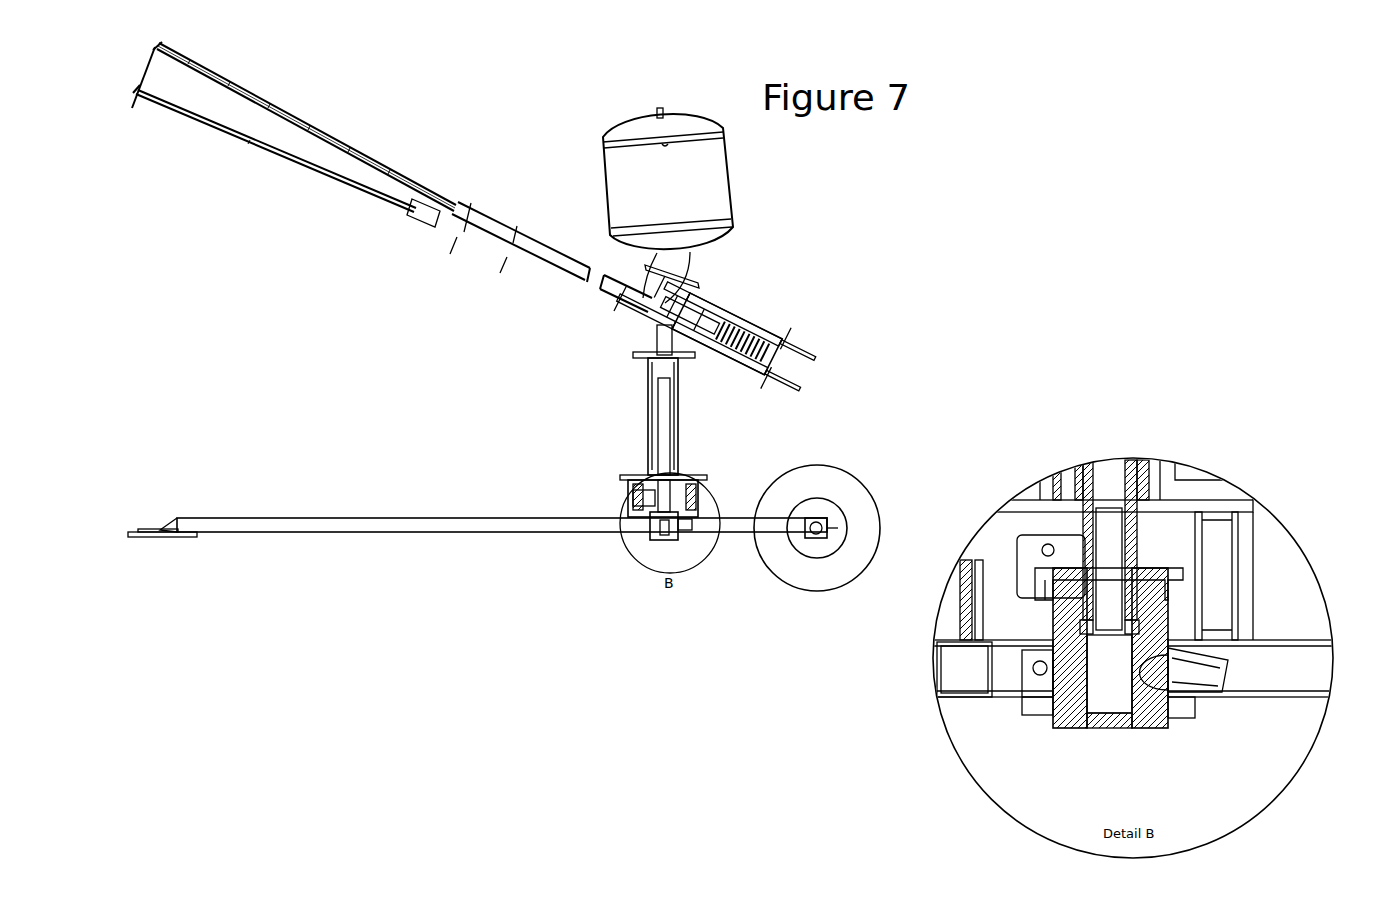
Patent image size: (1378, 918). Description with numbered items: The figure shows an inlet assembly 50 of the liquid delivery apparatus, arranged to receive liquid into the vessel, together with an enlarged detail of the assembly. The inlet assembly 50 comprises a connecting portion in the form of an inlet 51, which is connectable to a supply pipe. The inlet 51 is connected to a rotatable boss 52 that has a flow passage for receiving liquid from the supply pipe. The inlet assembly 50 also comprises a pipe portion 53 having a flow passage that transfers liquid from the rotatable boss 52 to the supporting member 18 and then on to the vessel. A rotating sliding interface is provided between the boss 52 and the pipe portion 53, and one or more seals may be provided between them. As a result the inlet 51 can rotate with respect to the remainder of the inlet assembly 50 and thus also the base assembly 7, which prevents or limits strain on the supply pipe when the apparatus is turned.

The base assembly 7 is at (725, 523).
The supporting member 18 is at (680, 445).
The inlet assembly 50 is at (652, 552).
The inlet 51 is at (685, 527).
The rotatable boss 52 is at (1070, 698).
The pipe portion 53 is at (1127, 590).